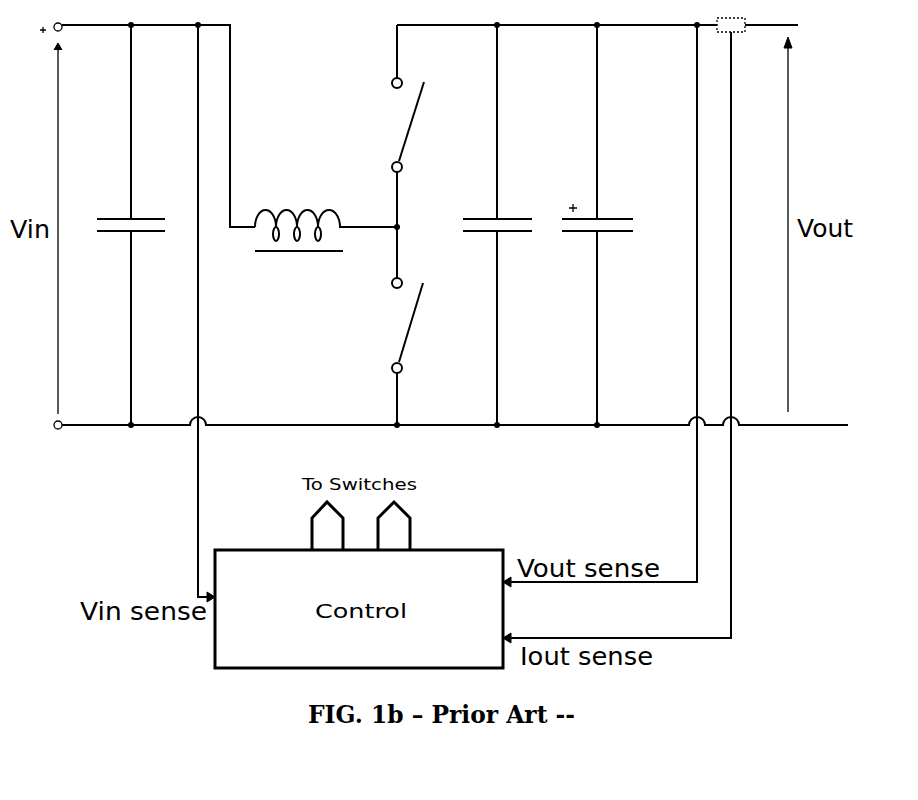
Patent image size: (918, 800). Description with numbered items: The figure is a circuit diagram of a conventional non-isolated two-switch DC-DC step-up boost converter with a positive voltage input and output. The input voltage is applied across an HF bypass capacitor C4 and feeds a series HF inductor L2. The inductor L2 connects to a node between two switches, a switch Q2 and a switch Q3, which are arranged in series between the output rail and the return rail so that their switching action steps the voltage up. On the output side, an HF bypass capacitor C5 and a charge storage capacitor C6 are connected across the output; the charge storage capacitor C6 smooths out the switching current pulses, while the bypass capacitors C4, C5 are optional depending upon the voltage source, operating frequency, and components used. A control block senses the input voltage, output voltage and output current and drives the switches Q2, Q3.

The HF bypass capacitor C4 is at (131, 225).
The series HF inductor L2 is at (326, 216).
The switch Q2 is at (393, 126).
The switch Q3 is at (391, 326).
The HF bypass capacitor C5 is at (493, 225).
The charge storage capacitor C6 is at (594, 225).